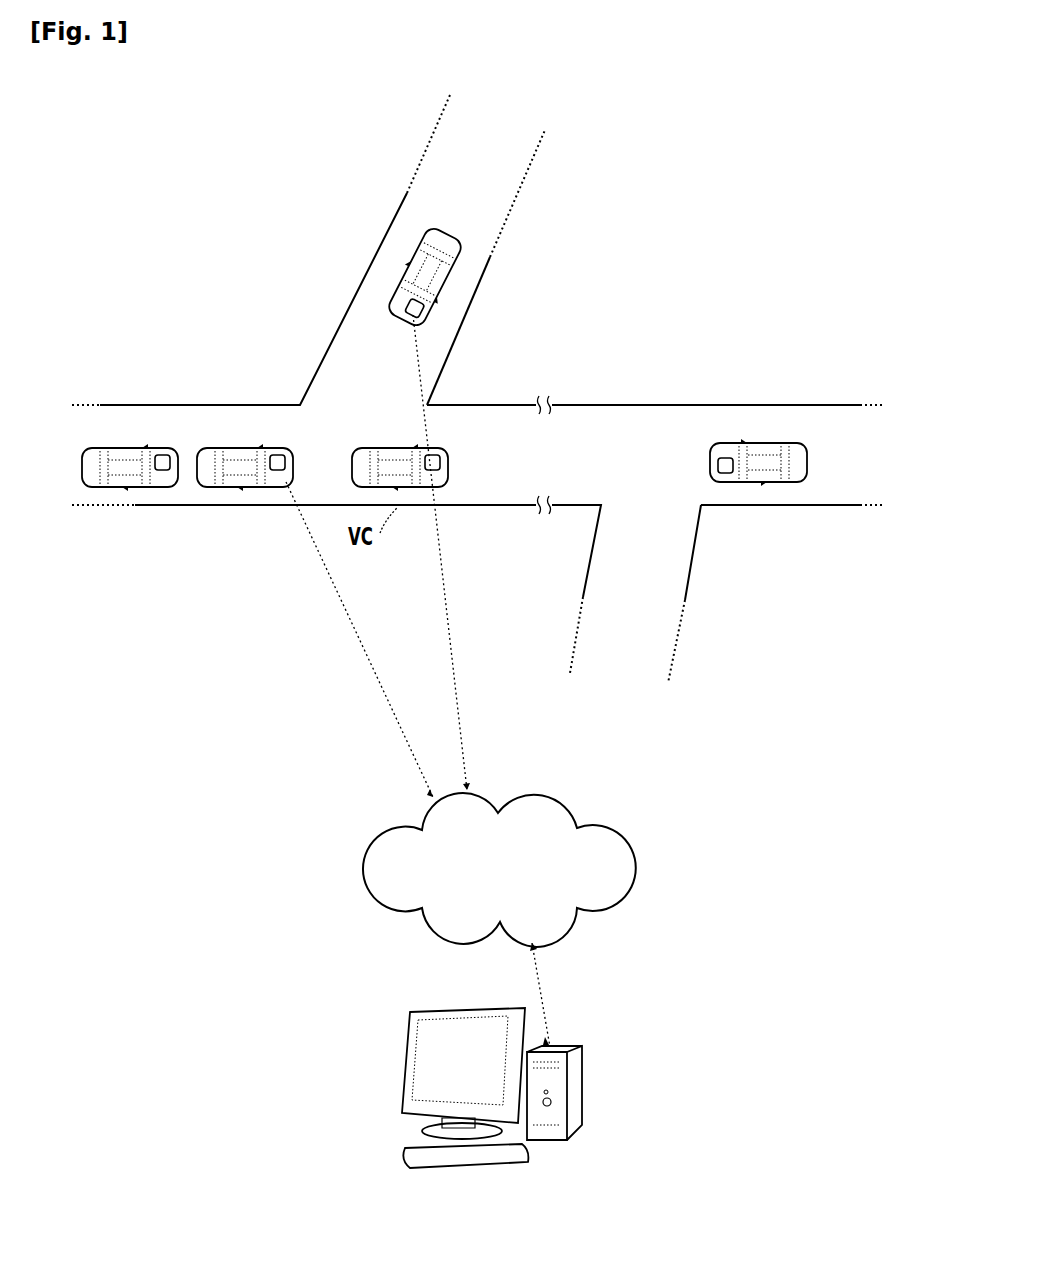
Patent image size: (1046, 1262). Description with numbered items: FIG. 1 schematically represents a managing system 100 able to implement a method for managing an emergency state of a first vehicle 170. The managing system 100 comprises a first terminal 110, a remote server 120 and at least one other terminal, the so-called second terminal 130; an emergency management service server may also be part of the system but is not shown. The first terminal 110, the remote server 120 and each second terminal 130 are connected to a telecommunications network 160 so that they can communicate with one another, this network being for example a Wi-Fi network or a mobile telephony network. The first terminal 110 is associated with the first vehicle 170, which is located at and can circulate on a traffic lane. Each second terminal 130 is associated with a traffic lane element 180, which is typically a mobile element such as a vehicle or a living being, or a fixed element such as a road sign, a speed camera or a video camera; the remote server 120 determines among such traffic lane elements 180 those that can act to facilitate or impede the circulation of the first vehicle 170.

The managing system 100 is at (672, 1008).
The first terminal 110 is at (438, 456).
The remote server 120 is at (572, 1050).
The second terminal 130 is at (163, 455).
The telecommunications network 160 is at (530, 879).
The first vehicle 170 is at (395, 465).
The traffic lane element 180 is at (127, 450).